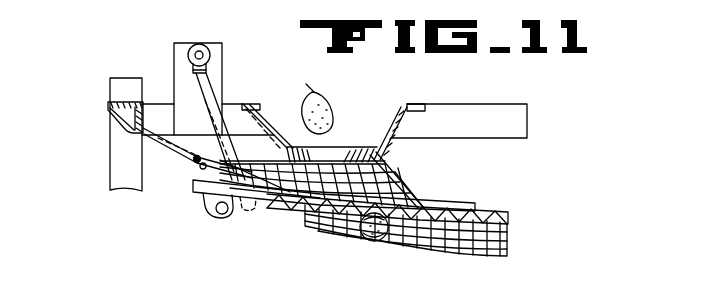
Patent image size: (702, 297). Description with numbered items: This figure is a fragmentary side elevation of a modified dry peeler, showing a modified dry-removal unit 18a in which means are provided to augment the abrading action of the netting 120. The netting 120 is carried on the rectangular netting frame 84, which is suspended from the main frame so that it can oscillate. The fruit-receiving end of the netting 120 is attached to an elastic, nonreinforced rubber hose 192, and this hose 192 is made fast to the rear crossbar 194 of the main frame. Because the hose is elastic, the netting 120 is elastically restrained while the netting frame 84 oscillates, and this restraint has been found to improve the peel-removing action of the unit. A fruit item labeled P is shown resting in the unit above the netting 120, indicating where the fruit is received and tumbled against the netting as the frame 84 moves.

The modified dry-removal unit 18a is at (537, 175).
The rectangular frame 84 is at (509, 212).
The netting 120 is at (360, 226).
The elastic, nonreinforced rubber hose 192 is at (186, 154).
The rear crossbar 194 is at (118, 124).
The pear (fruit) P is at (336, 98).